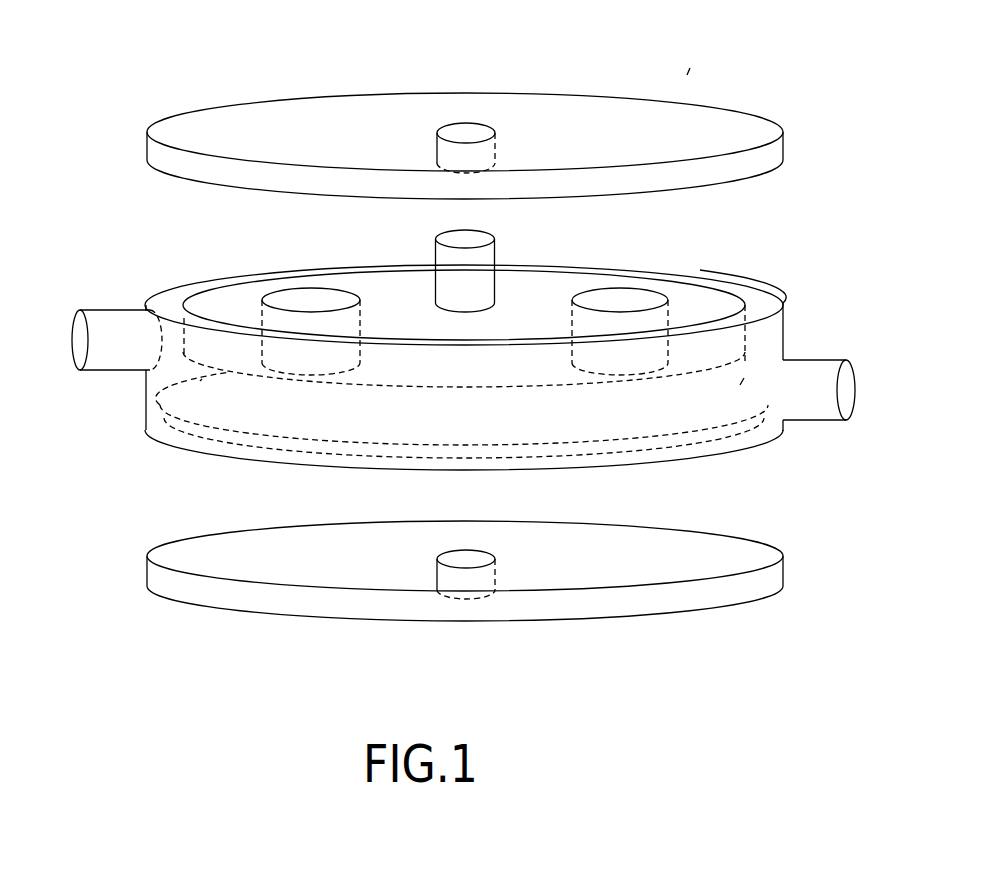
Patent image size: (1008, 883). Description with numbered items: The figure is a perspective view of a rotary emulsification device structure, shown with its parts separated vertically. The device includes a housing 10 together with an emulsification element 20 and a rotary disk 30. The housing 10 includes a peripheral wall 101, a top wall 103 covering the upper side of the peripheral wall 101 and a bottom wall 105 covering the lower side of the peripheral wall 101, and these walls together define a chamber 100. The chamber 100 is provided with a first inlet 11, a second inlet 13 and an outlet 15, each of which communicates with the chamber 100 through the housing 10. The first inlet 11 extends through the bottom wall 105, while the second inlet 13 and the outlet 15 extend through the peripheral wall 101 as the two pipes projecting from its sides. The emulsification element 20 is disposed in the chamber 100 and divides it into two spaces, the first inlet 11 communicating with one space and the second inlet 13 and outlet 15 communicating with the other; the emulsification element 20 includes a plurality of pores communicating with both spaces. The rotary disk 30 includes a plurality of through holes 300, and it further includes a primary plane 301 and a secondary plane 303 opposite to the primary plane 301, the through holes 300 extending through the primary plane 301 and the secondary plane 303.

The housing 10 is at (687, 75).
The top wall 103 is at (537, 125).
The bottom wall 105 is at (604, 605).
The chamber 100 is at (172, 302).
The peripheral wall 101 is at (765, 291).
The primary plane 301 is at (375, 297).
The through holes 300 is at (610, 302).
The secondary plane 303 is at (278, 380).
The outlet 15 is at (78, 343).
The second inlet 13 is at (851, 394).
The emulsification element 20 is at (740, 385).
The rotary disk 30 is at (202, 379).
The first inlet 11 is at (461, 550).